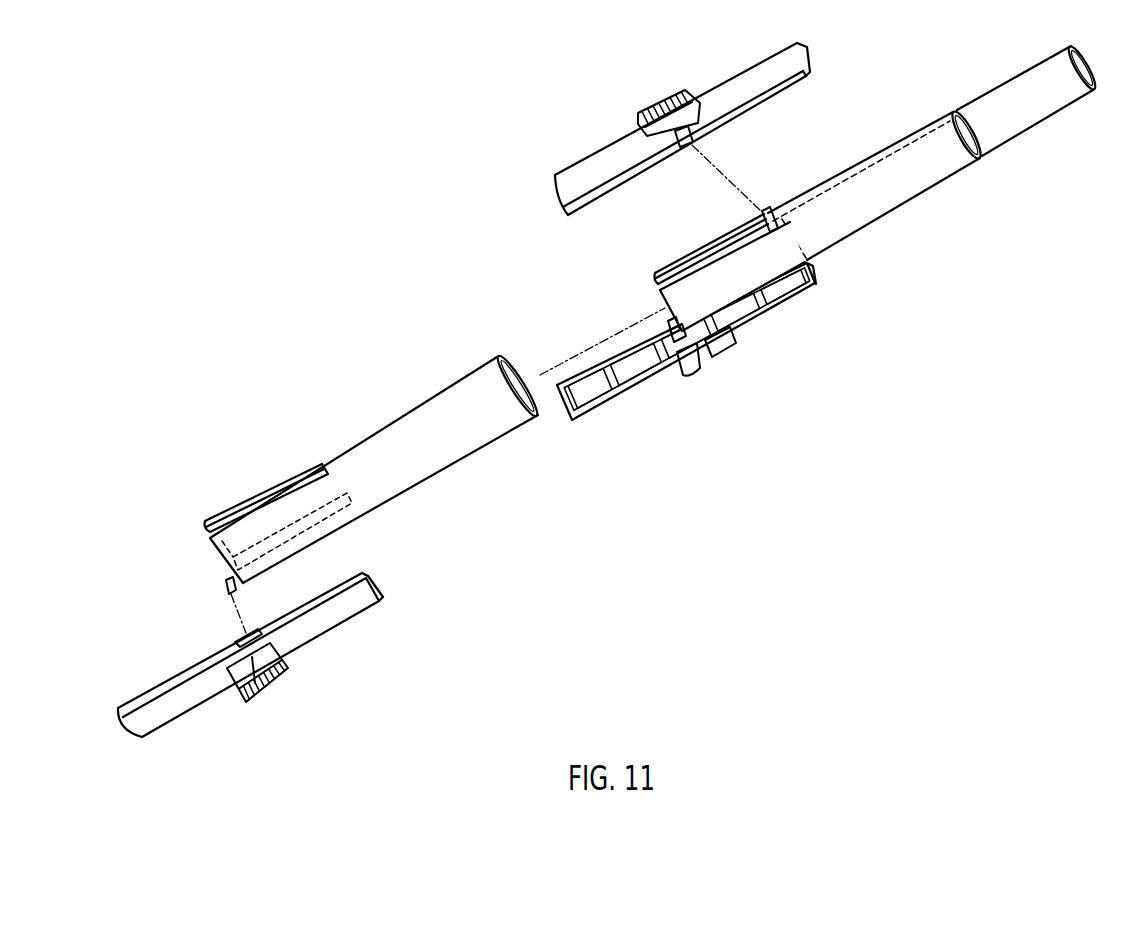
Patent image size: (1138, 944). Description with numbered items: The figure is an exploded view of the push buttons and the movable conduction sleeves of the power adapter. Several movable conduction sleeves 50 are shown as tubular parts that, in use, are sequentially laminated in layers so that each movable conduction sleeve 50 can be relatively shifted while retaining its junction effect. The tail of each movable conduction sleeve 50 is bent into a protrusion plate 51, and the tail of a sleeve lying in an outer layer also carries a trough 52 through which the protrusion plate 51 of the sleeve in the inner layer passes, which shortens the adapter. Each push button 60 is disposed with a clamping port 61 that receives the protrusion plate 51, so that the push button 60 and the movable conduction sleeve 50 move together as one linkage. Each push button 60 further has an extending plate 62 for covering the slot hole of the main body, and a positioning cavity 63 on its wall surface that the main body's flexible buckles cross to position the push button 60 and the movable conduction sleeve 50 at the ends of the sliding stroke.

The movable conduction sleeve 50 is at (477, 422).
The protrusion plate 51 is at (226, 586).
The trough 52 is at (287, 494).
The push button 60 is at (272, 677).
The clamping port 61 is at (238, 636).
The extending plate 62 is at (333, 614).
The positioning cavity 63 is at (700, 357).